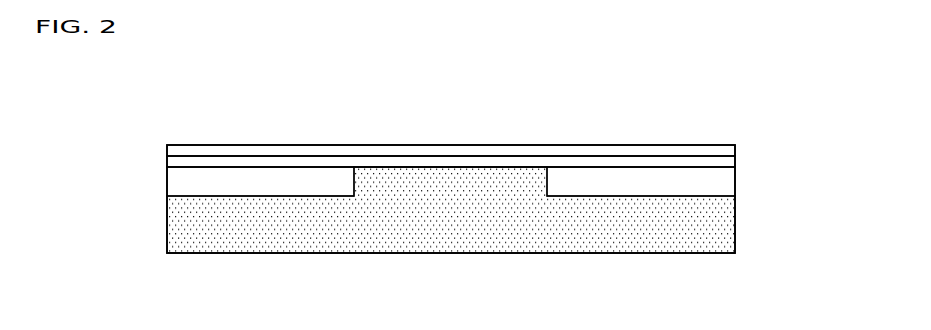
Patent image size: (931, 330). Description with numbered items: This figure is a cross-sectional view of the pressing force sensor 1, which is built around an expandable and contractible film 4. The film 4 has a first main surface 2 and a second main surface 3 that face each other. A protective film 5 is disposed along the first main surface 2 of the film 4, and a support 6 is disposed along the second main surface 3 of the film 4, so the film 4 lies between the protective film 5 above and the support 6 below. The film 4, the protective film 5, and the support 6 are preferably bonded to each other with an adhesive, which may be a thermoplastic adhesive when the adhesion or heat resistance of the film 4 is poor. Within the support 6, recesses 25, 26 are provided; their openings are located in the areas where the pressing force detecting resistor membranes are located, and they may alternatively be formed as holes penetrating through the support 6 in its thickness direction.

The pressing force sensor 1 is at (243, 100).
The first main surface 2 is at (617, 156).
The second main surface 3 is at (675, 167).
The film 4 is at (737, 157).
The protective film 5 is at (737, 146).
The support 6 is at (741, 228).
The recess 25 is at (202, 191).
The recess 26 is at (737, 182).